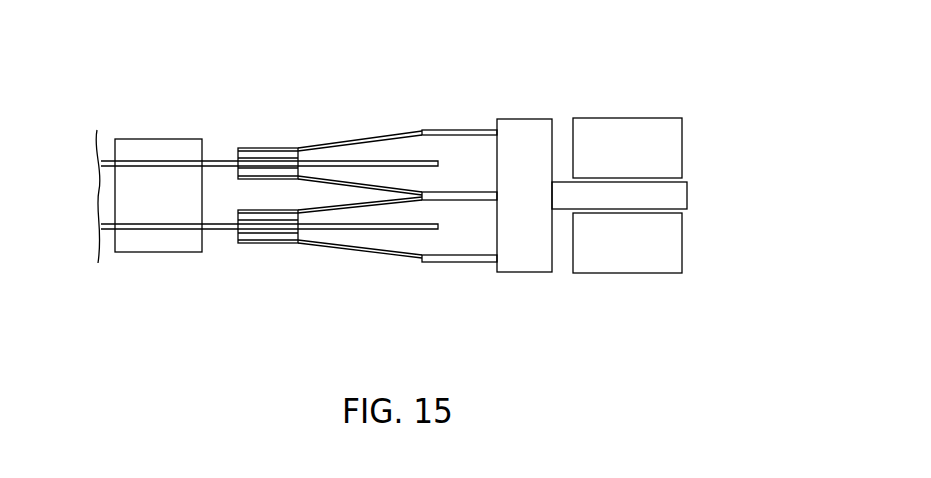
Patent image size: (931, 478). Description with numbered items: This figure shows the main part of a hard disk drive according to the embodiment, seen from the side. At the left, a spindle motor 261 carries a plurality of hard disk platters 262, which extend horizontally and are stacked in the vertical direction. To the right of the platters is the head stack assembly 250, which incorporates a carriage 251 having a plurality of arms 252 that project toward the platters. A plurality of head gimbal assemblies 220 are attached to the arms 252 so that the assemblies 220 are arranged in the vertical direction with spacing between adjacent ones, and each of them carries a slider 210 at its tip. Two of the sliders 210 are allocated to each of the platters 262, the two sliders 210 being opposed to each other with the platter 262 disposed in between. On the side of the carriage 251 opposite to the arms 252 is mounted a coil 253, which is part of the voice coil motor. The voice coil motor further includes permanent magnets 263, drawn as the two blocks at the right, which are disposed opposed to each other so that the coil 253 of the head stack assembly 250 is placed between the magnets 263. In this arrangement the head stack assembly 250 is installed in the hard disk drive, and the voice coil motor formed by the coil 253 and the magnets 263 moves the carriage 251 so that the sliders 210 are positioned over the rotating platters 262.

The slider 210 is at (228, 153).
The head gimbal assembly 220 is at (353, 138).
The head stack assembly 250 is at (586, 155).
The carriage 251 is at (506, 118).
The arm 252 is at (437, 129).
The coil 253 is at (677, 197).
The spindle motor 261 is at (139, 145).
The hard disk platter 262 is at (213, 158).
The permanent magnet 263 is at (622, 118).